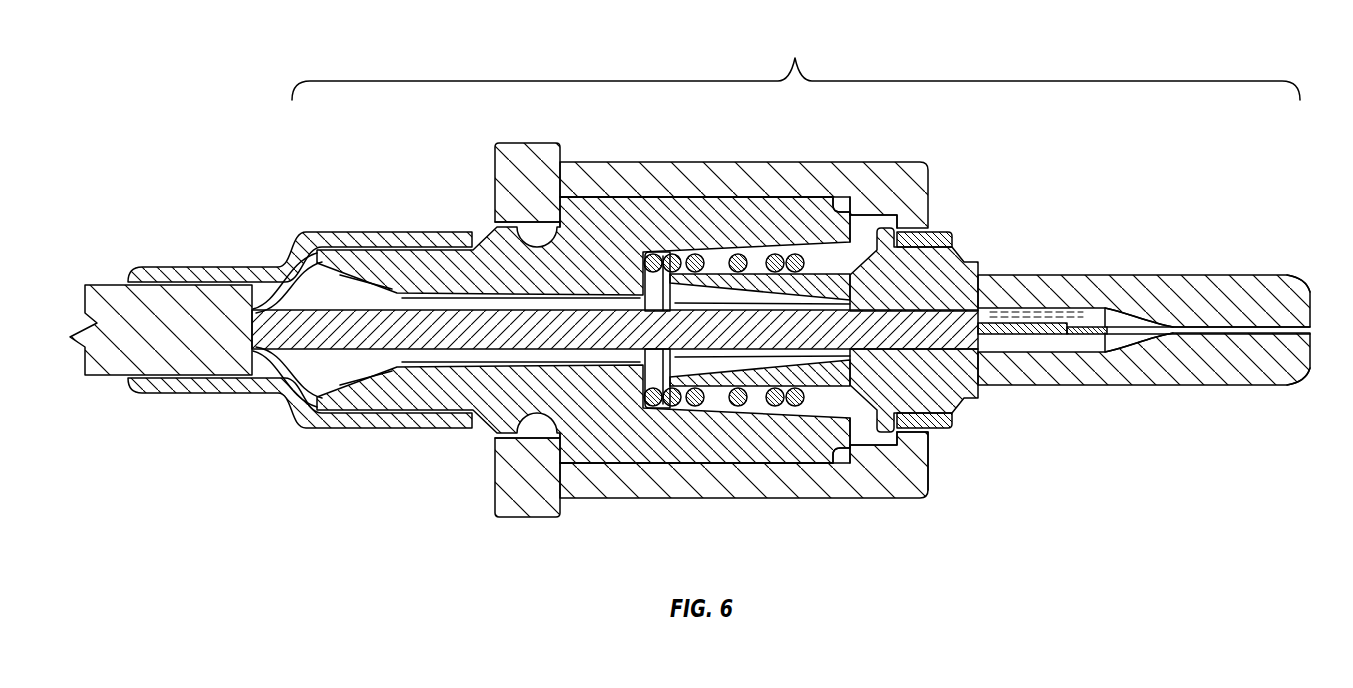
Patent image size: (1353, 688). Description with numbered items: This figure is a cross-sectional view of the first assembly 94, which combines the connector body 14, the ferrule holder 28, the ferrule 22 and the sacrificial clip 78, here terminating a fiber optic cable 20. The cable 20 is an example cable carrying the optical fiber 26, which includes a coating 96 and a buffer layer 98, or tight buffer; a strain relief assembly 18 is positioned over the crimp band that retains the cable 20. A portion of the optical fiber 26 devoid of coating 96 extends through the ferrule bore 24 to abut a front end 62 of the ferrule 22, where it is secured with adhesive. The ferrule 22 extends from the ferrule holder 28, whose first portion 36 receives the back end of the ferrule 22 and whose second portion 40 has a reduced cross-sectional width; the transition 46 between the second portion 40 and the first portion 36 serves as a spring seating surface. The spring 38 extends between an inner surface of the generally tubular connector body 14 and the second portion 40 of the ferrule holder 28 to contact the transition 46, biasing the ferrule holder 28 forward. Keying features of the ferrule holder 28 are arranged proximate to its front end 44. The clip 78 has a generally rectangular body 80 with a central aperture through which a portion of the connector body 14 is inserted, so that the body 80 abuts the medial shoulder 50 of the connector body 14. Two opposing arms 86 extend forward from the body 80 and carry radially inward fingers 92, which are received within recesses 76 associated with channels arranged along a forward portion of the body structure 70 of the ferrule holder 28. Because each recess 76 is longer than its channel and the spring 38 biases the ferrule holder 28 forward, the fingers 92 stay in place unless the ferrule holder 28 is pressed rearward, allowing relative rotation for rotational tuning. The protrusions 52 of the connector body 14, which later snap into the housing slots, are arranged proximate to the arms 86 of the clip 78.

The connector body 14 is at (620, 440).
The strain relief assembly 18 is at (242, 266).
The fiber optic cable 20 is at (100, 284).
The ferrule 22 is at (1176, 283).
The ferrule bore 24 is at (1311, 330).
The optical fiber 26 is at (1123, 336).
The ferrule holder 28 is at (844, 250).
The first portion 36 is at (813, 360).
The spring 38 is at (748, 256).
The second portion 40 is at (752, 372).
The front end 44 is at (978, 268).
The transition 46 is at (795, 255).
The medial shoulder 50 is at (562, 213).
The protrusions 52 is at (620, 203).
The front end 62 is at (1309, 366).
The body structure 70 is at (885, 226).
The recesses 76 is at (915, 416).
The clip 78 is at (490, 309).
The body 80 is at (490, 141).
The arms 86 is at (707, 161).
The fingers 92 is at (905, 240).
The first assembly 94 is at (796, 60).
The coating 96 is at (1043, 335).
The buffer layer 98 is at (352, 345).